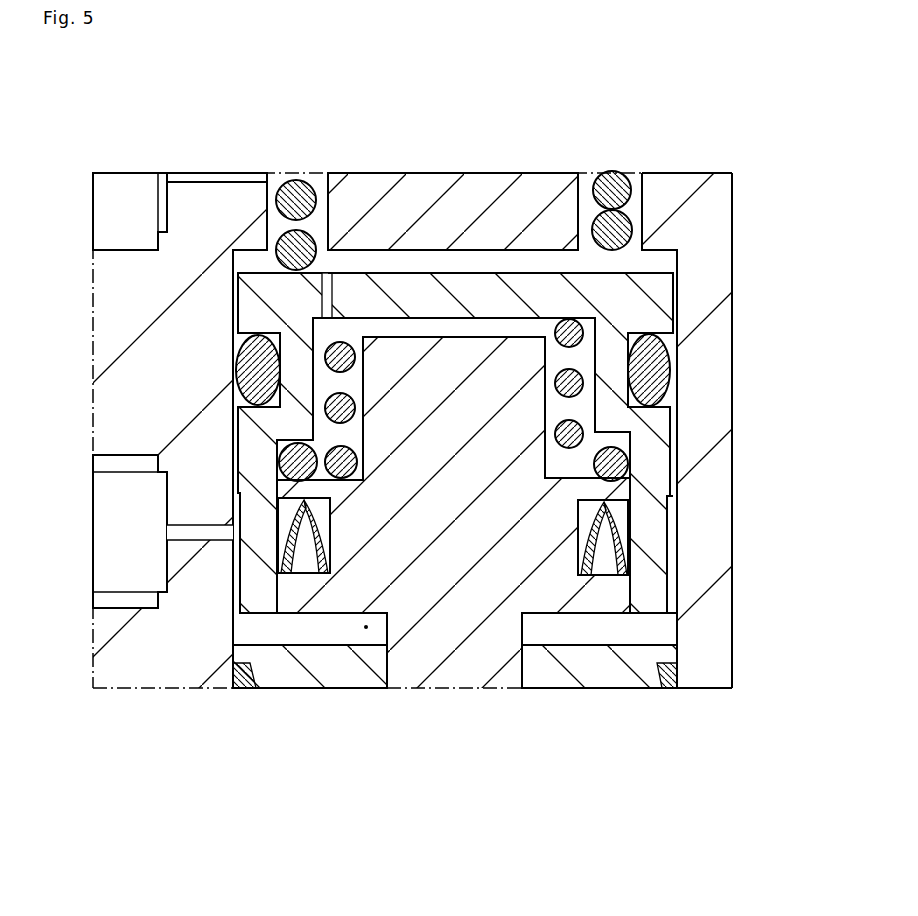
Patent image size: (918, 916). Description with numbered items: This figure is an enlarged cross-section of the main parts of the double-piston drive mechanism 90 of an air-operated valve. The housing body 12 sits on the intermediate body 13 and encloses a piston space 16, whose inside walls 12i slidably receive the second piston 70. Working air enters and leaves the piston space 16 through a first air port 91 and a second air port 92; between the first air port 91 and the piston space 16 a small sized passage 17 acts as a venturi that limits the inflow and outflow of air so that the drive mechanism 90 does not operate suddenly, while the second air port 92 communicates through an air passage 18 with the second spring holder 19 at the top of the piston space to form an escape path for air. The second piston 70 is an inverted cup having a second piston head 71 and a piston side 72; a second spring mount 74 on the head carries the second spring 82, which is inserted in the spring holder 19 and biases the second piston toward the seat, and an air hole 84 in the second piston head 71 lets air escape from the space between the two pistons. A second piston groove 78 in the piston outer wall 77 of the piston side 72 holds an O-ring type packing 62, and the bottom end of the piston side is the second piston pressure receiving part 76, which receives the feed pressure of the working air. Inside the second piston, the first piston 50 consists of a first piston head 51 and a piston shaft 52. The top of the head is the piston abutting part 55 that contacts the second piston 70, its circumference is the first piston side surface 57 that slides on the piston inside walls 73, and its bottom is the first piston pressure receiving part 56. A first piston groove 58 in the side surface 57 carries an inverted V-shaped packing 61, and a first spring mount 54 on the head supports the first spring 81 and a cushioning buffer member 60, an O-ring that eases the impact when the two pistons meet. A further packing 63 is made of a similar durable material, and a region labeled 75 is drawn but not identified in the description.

The housing body 12 is at (732, 192).
The inside walls 12i is at (681, 604).
The intermediate body 13 is at (633, 683).
The piston space 16 is at (366, 630).
The small sized passage 17 is at (190, 535).
The air passage 18 is at (192, 176).
The second spring holder 19 is at (330, 205).
The first piston 50 is at (543, 616).
The first piston head 51 is at (480, 353).
The piston shaft 52 is at (455, 675).
The first spring mount 54 is at (290, 452).
The piston abutting part 55 is at (522, 334).
The first piston pressure receiving part 56 is at (312, 615).
The first piston side surface 57 is at (607, 503).
The first piston groove 58 is at (613, 516).
The buffer member 60 is at (628, 464).
The packing 61 is at (613, 558).
The packing 62 is at (250, 375).
The packing 63 is at (243, 688).
The second piston 70 is at (648, 272).
The second piston head 71 is at (440, 297).
The piston side 72 is at (655, 588).
The piston inside walls 73 is at (673, 606).
The second spring mount 74 is at (266, 270).
The gap 75 is at (420, 323).
The second piston pressure receiving part 76 is at (265, 615).
The piston outer wall 77 is at (327, 305).
The second piston groove 78 is at (660, 347).
The first spring 81 is at (582, 428).
The second spring 82 is at (620, 222).
The air hole 84 is at (327, 298).
The drive mechanism 90 is at (550, 274).
The first air port 91 is at (116, 518).
The second air port 92 is at (112, 206).